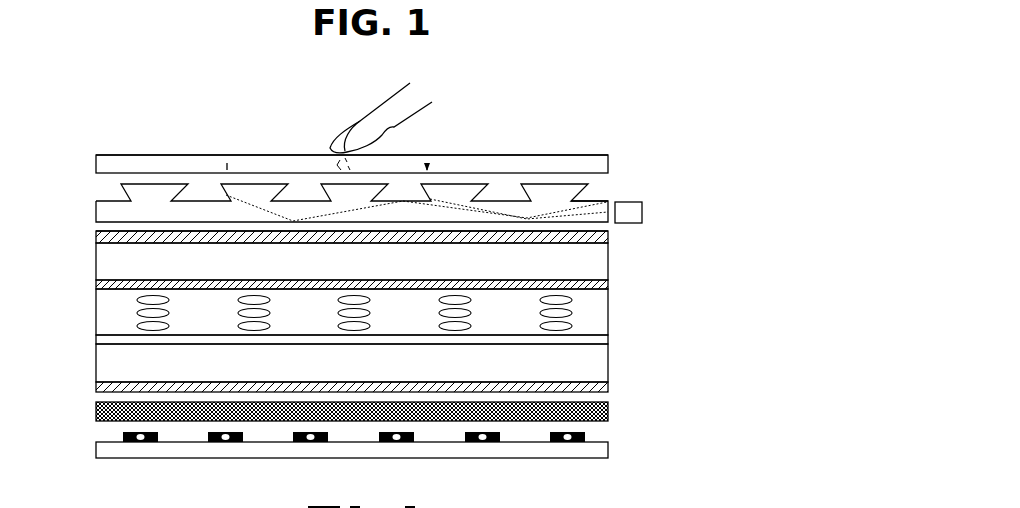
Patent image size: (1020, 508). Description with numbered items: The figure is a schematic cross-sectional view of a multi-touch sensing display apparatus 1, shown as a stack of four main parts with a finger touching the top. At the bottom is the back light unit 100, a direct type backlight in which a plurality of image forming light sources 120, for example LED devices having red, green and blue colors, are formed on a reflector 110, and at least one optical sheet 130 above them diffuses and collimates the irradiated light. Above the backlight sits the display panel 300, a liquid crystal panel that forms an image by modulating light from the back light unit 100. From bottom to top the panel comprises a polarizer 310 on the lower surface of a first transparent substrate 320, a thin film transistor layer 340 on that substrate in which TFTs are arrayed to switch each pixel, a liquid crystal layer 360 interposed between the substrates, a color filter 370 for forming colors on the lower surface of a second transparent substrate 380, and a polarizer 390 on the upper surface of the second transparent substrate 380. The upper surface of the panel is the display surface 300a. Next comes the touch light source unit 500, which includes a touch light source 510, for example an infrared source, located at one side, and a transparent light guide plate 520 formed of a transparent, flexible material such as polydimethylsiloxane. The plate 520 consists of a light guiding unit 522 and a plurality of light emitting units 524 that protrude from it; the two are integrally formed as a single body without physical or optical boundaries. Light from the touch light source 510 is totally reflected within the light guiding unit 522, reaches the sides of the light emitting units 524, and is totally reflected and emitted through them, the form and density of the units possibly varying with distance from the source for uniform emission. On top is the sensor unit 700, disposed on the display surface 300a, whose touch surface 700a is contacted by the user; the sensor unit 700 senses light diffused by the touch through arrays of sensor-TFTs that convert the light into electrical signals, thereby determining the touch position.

The multi-touch sensing display apparatus 1 is at (92, 117).
The back light unit 100 is at (352, 430).
The reflector 110 is at (609, 450).
The image forming light sources 120 is at (586, 435).
The optical sheet 130 is at (611, 403).
The display panel 300 is at (373, 310).
The display surface 300a is at (609, 232).
The polarizer 310 is at (609, 387).
The first transparent substrate 320 is at (609, 363).
The thin film transistor layer 340 is at (609, 339).
The liquid crystal layer 360 is at (609, 312).
The color filter 370 is at (609, 284).
The second transparent substrate 380 is at (609, 262).
The polarizer 390 is at (609, 238).
The touch light source unit 500 is at (377, 190).
The touch light source 510 is at (643, 212).
The transparent light guide plate 520 is at (404, 189).
The light guiding unit 522 is at (612, 197).
The light emitting units 524 is at (588, 184).
The sensor unit 700 is at (85, 149).
The touch surface 700a is at (580, 155).